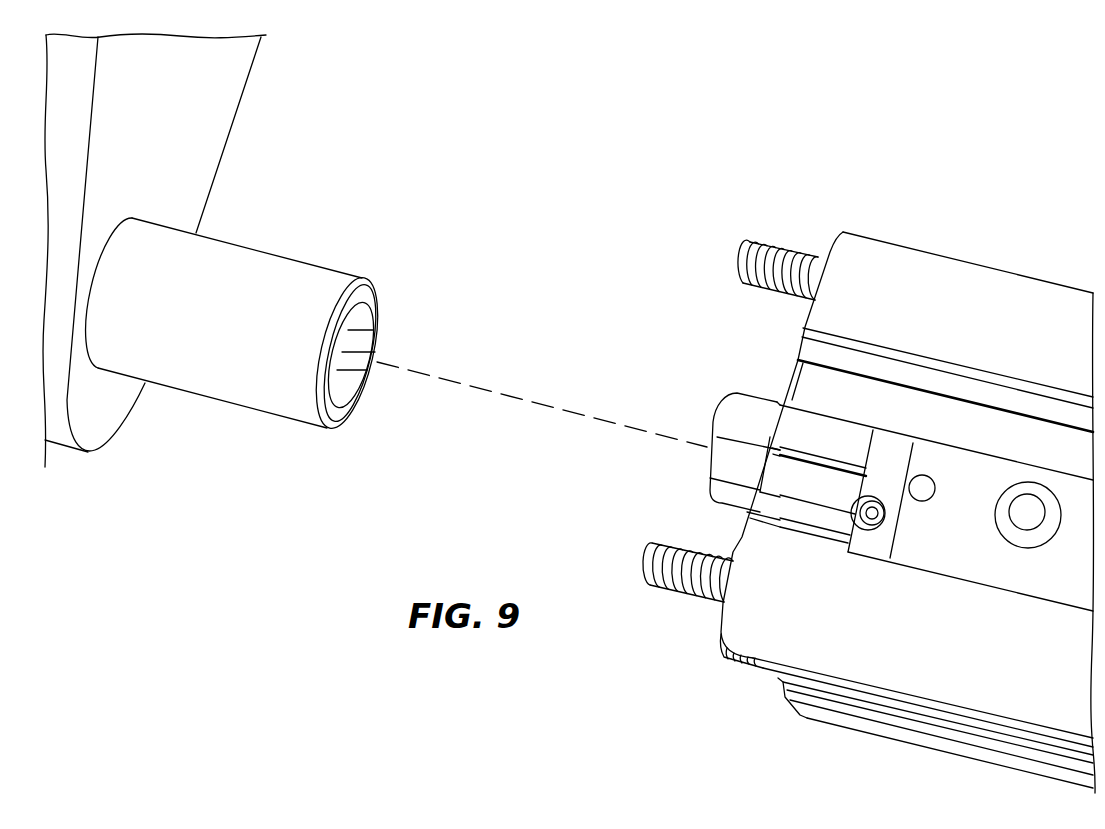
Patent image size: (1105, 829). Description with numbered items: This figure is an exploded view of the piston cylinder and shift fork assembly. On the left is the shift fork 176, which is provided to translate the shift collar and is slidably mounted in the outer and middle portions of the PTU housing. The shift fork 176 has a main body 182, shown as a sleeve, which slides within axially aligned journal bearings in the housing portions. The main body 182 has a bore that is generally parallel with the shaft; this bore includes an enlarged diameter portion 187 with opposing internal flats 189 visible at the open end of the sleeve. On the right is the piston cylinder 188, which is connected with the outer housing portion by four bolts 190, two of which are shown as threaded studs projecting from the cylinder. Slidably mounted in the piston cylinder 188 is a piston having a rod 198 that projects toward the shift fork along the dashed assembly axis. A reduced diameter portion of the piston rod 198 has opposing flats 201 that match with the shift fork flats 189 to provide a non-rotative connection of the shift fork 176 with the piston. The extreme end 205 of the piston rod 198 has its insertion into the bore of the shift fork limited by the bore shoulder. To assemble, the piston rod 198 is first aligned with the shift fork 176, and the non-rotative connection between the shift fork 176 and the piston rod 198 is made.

The shift fork 176 is at (225, 147).
The main body 182 is at (270, 250).
The enlarged diameter portion 187 is at (347, 393).
The internal flats 189 is at (362, 348).
The piston cylinder 188 is at (867, 232).
The bolts 190 is at (778, 248).
The piston rod 198 is at (773, 400).
The flats 201 is at (727, 457).
The extreme end 205 is at (710, 493).